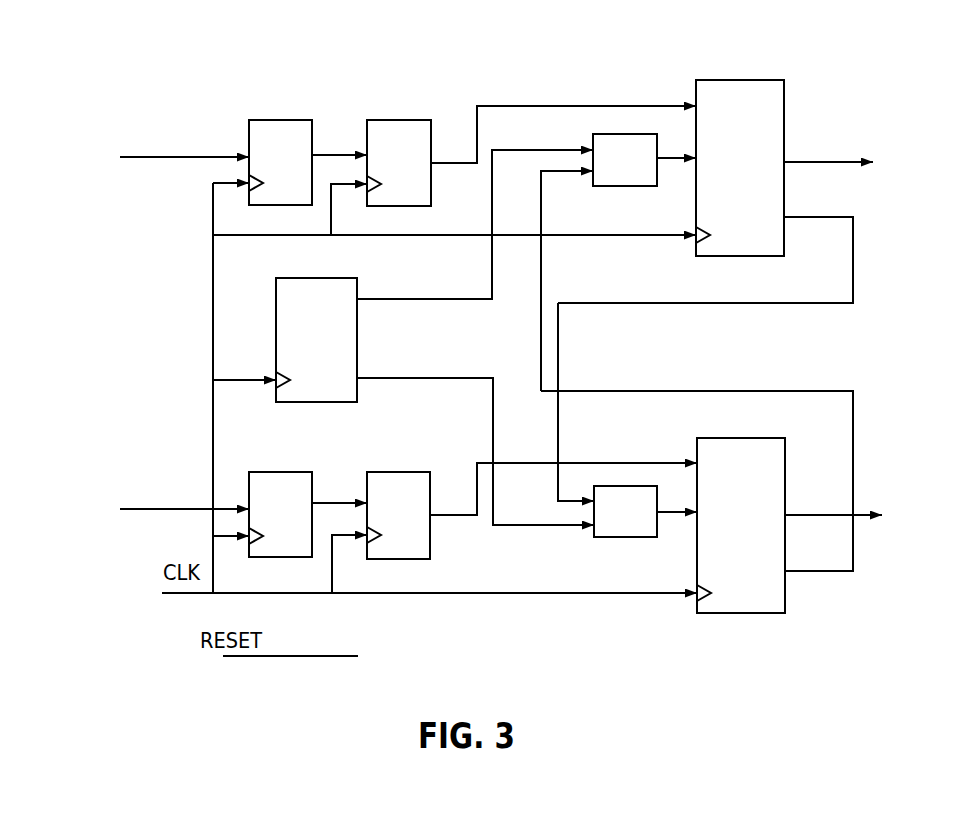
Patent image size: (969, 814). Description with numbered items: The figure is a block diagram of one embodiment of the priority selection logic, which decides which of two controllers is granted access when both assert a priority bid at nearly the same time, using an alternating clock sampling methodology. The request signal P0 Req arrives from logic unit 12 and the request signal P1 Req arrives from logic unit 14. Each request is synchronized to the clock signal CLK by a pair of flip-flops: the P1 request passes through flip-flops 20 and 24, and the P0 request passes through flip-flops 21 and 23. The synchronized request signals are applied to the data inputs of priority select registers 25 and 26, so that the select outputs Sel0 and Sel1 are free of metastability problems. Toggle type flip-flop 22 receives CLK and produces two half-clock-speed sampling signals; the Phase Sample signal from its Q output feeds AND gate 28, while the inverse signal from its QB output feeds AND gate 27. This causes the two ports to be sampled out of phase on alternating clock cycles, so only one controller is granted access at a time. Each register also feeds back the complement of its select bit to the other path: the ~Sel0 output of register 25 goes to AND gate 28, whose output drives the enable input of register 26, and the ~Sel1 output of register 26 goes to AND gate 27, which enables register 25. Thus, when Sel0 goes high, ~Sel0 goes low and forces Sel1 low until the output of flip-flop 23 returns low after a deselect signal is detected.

The logic unit 12 is at (148, 540).
The logic unit 14 is at (148, 187).
The flip-flop 20 is at (280, 119).
The flip-flop 21 is at (263, 472).
The toggle type flip-flop 22 is at (276, 312).
The flip-flop 23 is at (384, 472).
The flip-flop 24 is at (400, 120).
The priority select register 25 is at (733, 438).
The priority select register 26 is at (716, 80).
The AND gate 27 is at (620, 538).
The AND gate 28 is at (630, 187).